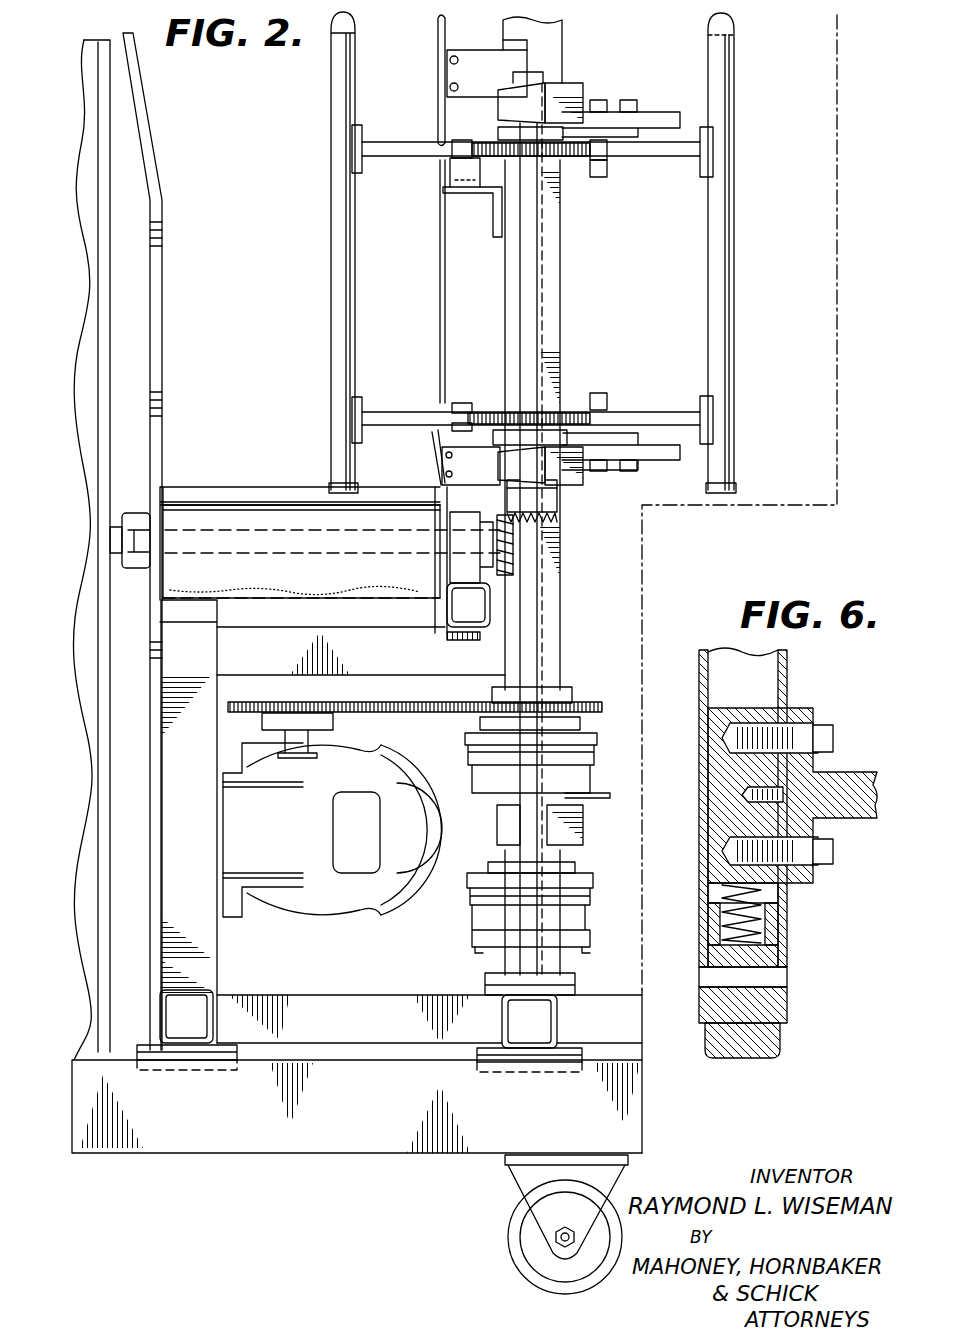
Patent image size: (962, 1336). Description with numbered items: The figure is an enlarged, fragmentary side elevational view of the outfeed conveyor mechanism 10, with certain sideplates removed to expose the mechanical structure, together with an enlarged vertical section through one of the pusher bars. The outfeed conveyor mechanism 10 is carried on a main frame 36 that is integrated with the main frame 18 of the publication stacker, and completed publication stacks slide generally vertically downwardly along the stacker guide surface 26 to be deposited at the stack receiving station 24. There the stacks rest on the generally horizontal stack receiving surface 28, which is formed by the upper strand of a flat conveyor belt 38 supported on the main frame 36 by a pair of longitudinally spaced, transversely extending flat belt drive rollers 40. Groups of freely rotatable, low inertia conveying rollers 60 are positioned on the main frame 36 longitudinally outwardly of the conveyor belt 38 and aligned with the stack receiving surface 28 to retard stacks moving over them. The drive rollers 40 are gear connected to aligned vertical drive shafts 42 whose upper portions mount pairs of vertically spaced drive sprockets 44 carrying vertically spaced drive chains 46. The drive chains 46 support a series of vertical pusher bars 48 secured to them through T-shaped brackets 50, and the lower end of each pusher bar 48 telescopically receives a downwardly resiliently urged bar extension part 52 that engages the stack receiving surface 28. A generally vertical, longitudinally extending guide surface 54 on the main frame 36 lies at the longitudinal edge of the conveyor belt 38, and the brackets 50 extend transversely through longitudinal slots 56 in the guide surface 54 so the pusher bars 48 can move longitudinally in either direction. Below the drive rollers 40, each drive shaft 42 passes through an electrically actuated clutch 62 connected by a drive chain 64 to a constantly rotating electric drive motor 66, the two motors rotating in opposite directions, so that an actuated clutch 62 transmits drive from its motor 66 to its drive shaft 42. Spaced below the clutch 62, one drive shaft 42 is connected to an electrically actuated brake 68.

In FIG. 2, the outfeed conveyor mechanism 10 is at (303, 1165).
In FIG. 2, the main frame 18 is at (88, 149).
In FIG. 2, the stack receiving station 24 is at (247, 300).
In FIG. 2, the stacker guide surface 26 is at (165, 320).
In FIG. 2, the stack receiving surface 28 is at (243, 487).
In FIG. 2, the main frame 36 is at (252, 1085).
In FIG. 2, the flat conveyor belt 38 is at (268, 568).
In FIG. 2, the flat belt drive rollers 40 is at (150, 573).
In FIG. 2, the vertical drive shafts 42 is at (528, 606).
In FIG. 2, the drive sprockets 44 is at (497, 140).
In FIG. 2, the drive chains 46 is at (571, 158).
In FIG. 2, the vertical pusher bars 48 is at (342, 192).
In FIG. 6, the vertical pusher bars 48 is at (790, 681).
In FIG. 2, the T-shaped brackets 50 is at (391, 158).
In FIG. 6, the T-shaped brackets 50 is at (852, 779).
In FIG. 2, the bar extension part 52 is at (354, 488).
In FIG. 6, the bar extension part 52 is at (752, 1038).
In FIG. 2, the guide surface 54 is at (437, 269).
In FIG. 2, the longitudinal slots 56 is at (436, 143).
In FIG. 2, the conveying rollers 60 is at (203, 496).
In FIG. 2, the electrically actuated clutch 62 is at (578, 782).
In FIG. 2, the drive chains 64 is at (402, 712).
In FIG. 2, the electric drive motors 66 is at (360, 904).
In FIG. 2, the electrically actuated brake 68 is at (485, 917).